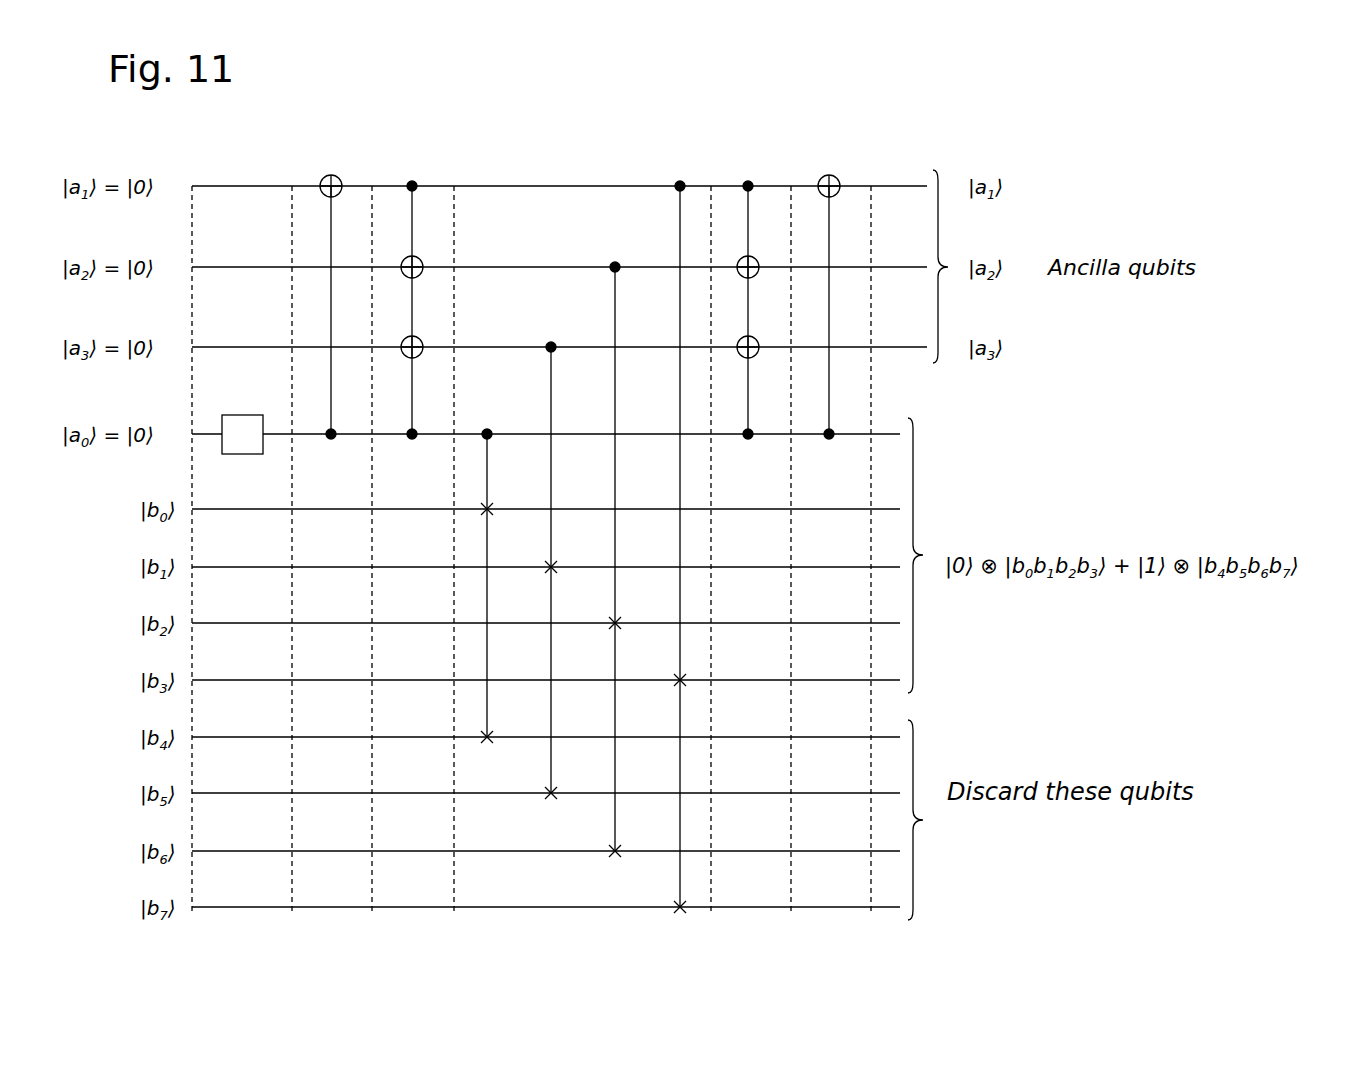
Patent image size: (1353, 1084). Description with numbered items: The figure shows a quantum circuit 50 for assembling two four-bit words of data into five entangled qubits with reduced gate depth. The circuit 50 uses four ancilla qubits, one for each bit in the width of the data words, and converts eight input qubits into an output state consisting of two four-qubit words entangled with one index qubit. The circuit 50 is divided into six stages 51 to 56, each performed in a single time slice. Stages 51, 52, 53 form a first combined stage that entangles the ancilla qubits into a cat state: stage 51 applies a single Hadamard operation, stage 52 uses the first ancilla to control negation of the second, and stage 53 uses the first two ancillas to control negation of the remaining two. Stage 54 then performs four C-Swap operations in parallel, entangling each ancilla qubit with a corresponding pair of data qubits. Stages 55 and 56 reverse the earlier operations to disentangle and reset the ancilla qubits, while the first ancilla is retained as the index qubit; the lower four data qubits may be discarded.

The circuit 50 is at (531, 137).
The stage 51 is at (258, 912).
The stage 52 is at (352, 912).
The stage 53 is at (428, 912).
The stage 54 is at (578, 912).
The stage 55 is at (765, 912).
The stage 56 is at (840, 912).